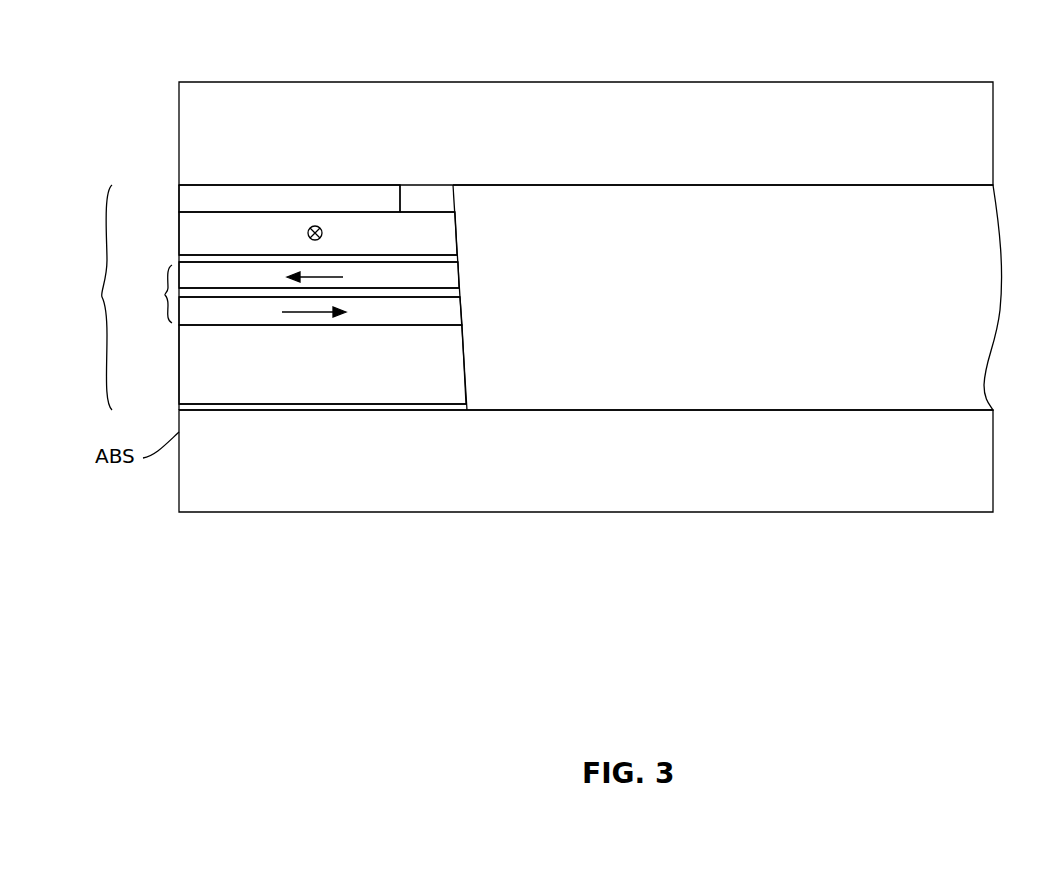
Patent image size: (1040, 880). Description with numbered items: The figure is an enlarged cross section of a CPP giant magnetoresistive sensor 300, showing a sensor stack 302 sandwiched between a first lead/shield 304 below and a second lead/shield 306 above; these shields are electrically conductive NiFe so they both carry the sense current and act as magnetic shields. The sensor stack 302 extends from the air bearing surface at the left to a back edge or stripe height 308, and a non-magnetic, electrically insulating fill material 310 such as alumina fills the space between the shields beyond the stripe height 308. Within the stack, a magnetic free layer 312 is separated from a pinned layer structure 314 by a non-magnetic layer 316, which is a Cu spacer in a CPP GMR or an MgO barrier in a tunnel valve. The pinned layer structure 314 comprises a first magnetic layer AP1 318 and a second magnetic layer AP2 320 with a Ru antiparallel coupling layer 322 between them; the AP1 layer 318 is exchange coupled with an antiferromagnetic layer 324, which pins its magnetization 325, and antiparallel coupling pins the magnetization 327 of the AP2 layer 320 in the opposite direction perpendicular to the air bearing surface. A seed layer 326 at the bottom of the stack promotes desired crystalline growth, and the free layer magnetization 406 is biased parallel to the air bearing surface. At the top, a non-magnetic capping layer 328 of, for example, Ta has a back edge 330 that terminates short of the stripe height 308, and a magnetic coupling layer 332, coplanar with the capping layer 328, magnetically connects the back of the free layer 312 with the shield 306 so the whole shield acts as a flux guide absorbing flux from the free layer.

The CPP giant magnetoresistive sensor 300 is at (422, 69).
The sensor stack 302 is at (107, 206).
The first lead/shield 304 is at (638, 465).
The second lead/shield 306 is at (638, 132).
The stripe height 308 is at (460, 336).
The fill material 310 is at (820, 272).
The free layer 312 is at (248, 231).
The pinned layer structure 314 is at (166, 262).
The non-magnetic layer 316 is at (453, 258).
The first magnetic layer AP1 318 is at (248, 309).
The second magnetic layer AP2 320 is at (248, 273).
The antiparallel coupling layer 322 is at (455, 296).
The antiferromagnetic layer 324 is at (368, 355).
The magnetization of AP1 layer 325 is at (312, 312).
The seed layer 326 is at (466, 407).
The magnetization of AP2 layer 327 is at (322, 277).
The capping layer 328 is at (318, 197).
The back edge of capping layer 330 is at (400, 197).
The magnetic coupling layer 332 is at (440, 199).
The magnetization of free layer 406 is at (323, 233).